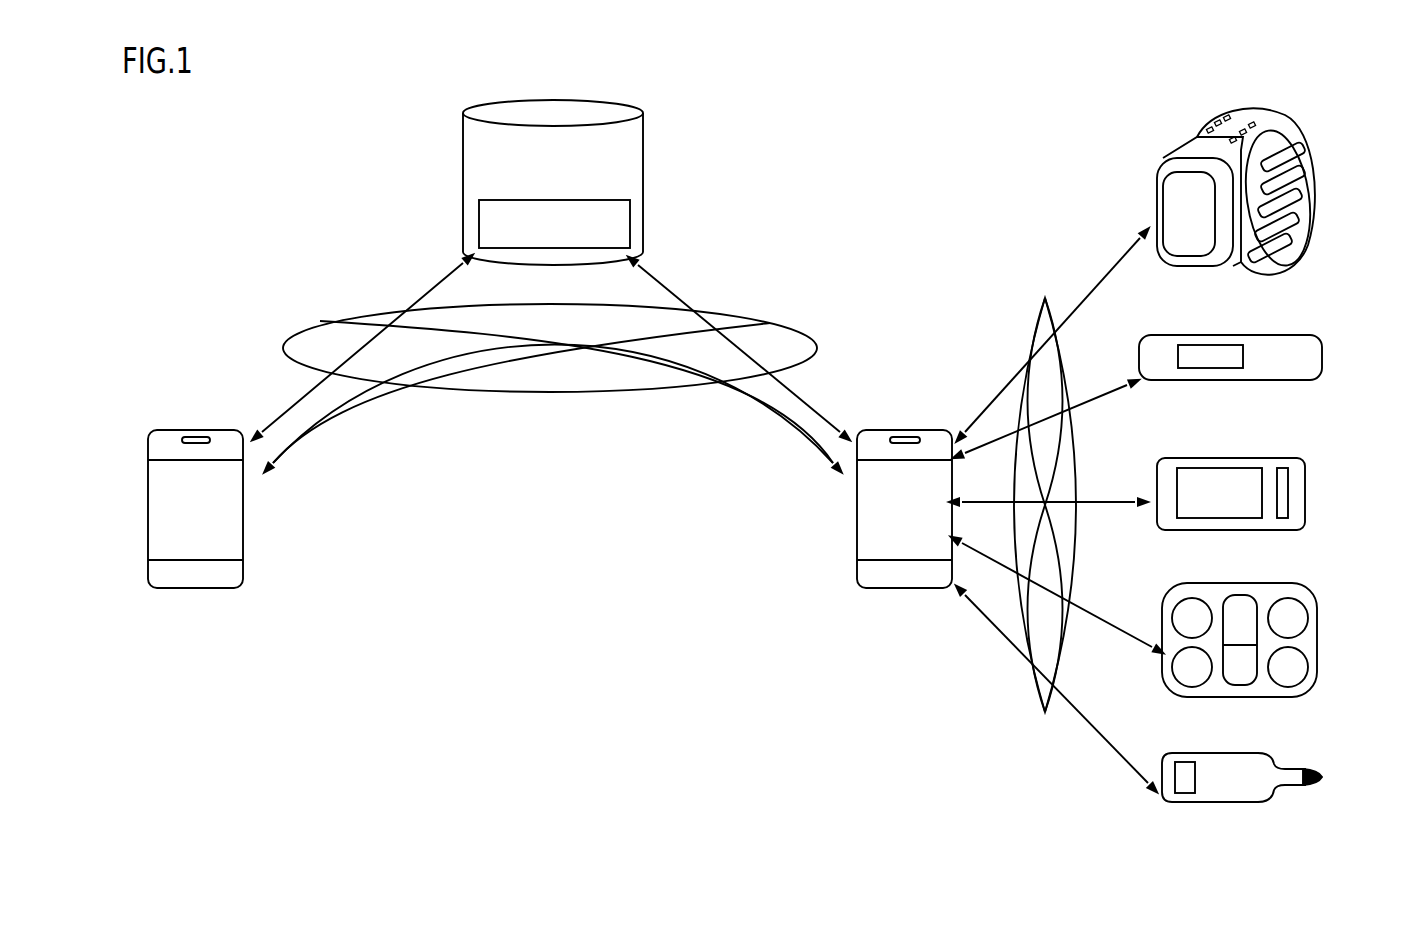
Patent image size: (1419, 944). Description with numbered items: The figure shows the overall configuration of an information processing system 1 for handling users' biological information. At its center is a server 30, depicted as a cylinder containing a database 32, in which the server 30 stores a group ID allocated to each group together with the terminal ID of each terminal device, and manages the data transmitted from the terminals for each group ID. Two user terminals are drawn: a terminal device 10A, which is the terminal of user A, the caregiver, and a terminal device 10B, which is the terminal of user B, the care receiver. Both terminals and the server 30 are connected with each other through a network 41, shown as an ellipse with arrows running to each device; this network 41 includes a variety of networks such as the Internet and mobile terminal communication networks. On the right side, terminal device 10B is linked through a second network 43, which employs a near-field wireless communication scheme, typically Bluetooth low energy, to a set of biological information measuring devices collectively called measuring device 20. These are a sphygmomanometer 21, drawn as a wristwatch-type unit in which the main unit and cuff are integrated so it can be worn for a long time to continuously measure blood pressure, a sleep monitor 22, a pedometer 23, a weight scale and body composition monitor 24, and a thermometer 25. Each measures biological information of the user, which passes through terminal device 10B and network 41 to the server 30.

The information processing system 1 is at (1207, 92).
The terminal device 10A is at (193, 428).
The terminal device 10B is at (903, 426).
The measuring device 20 is at (1355, 120).
The sphygmomanometer 21 is at (1263, 117).
The sleep monitor 22 is at (1265, 334).
The pedometer 23 is at (1246, 457).
The weight scale and body composition monitor 24 is at (1258, 583).
The thermometer 25 is at (1256, 753).
The server 30 is at (579, 169).
The database 32 is at (630, 209).
The network 41 is at (765, 316).
The network 43 is at (1043, 297).